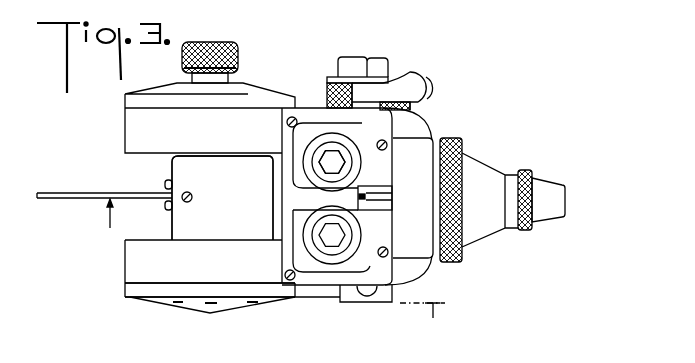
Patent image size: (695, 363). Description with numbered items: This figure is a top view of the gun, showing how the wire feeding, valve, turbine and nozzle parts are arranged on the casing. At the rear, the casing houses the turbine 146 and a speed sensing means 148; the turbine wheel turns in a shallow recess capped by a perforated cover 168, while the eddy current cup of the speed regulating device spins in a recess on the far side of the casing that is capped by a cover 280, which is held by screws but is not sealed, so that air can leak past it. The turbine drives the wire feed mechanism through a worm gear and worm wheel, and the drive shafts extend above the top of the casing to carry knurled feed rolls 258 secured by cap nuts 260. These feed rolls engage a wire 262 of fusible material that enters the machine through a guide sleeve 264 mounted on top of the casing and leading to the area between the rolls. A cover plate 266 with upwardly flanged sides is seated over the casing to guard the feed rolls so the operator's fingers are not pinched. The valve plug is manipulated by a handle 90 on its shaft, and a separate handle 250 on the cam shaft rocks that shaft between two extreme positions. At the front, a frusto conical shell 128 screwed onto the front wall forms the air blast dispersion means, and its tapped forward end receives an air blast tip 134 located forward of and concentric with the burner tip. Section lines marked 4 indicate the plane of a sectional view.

The speed sensing means 148 is at (166, 79).
The cover 280 is at (260, 83).
The handle 90 is at (362, 60).
The handle 250 is at (423, 77).
The cover plate 266 is at (383, 133).
The frusto conical shell 128 is at (480, 182).
The air blast tip 134 is at (552, 188).
The cap nuts 260 is at (323, 162).
The knurled feed rolls 258 is at (300, 168).
The guide sleeve 264 is at (275, 203).
The wire 262 is at (77, 174).
The turbine 146 is at (160, 311).
The perforated cover 168 is at (193, 312).
The section line 4- 4 is at (274, 273).